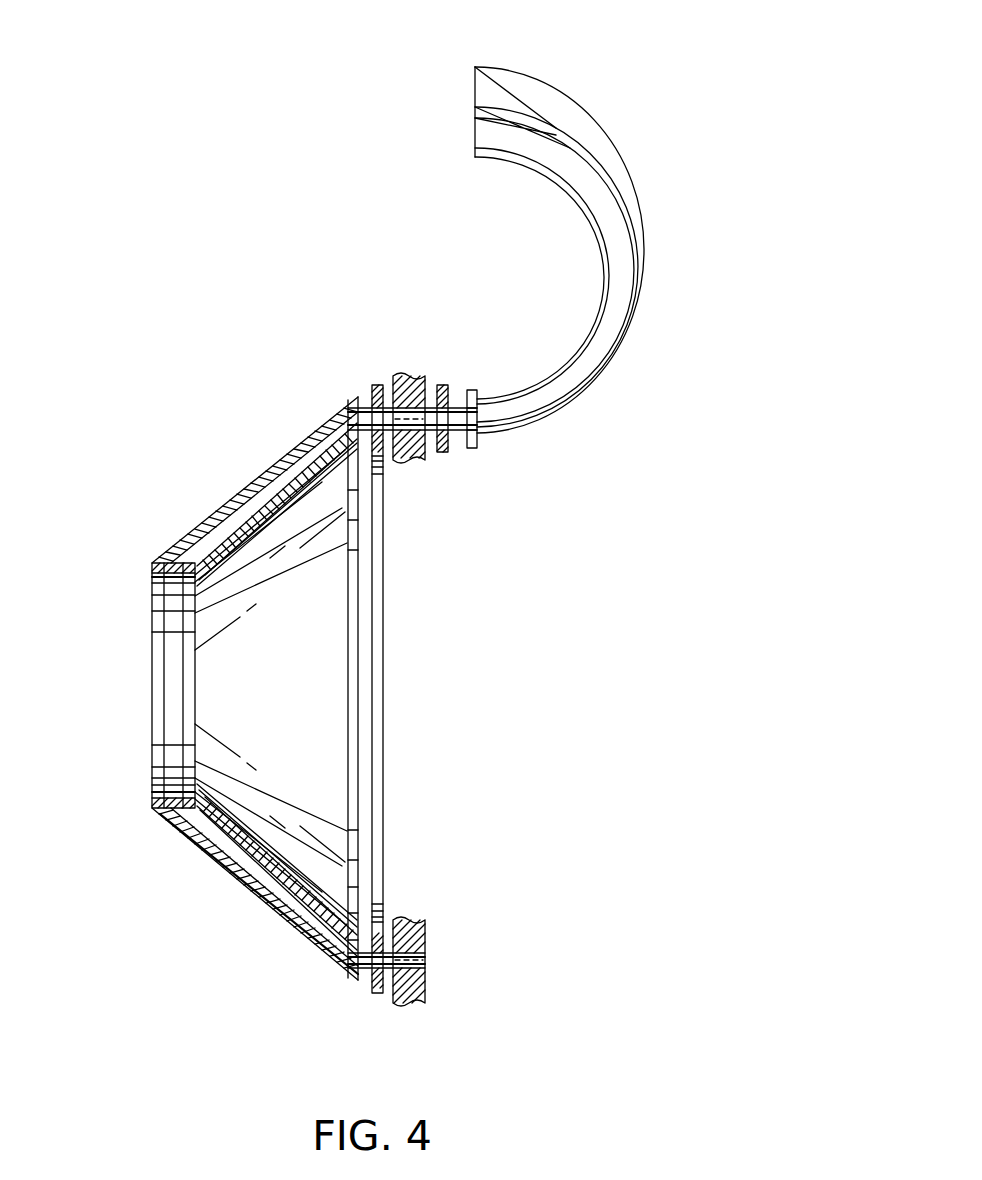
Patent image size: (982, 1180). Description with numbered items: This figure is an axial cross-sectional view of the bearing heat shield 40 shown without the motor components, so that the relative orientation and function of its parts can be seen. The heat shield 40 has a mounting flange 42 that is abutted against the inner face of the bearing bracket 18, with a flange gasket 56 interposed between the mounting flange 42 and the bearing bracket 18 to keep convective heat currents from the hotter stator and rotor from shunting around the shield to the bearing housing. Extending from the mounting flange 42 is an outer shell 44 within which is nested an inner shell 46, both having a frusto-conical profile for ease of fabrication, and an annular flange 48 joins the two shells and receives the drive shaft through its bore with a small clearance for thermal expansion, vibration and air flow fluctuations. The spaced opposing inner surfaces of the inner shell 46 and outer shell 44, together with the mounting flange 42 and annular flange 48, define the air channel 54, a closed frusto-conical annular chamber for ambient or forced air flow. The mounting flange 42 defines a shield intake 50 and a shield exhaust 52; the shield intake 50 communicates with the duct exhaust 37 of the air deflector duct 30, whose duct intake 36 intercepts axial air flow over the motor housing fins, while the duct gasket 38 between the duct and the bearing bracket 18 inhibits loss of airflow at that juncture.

The bearing bracket 18 is at (411, 460).
The air deflector duct 30 is at (499, 233).
The duct intake 36 is at (475, 127).
The duct exhaust 37 is at (466, 412).
The duct gasket 38 is at (441, 385).
The bearing heat shield 40 is at (249, 702).
The mounting flange 42 is at (355, 702).
The outer shell 44 is at (157, 560).
The inner shell 46 is at (203, 553).
The annular flange 48 is at (157, 752).
The shield intake 50 is at (337, 412).
The shield exhaust 52 is at (345, 958).
The air channel 54 is at (238, 865).
The flange gasket 56 is at (377, 385).